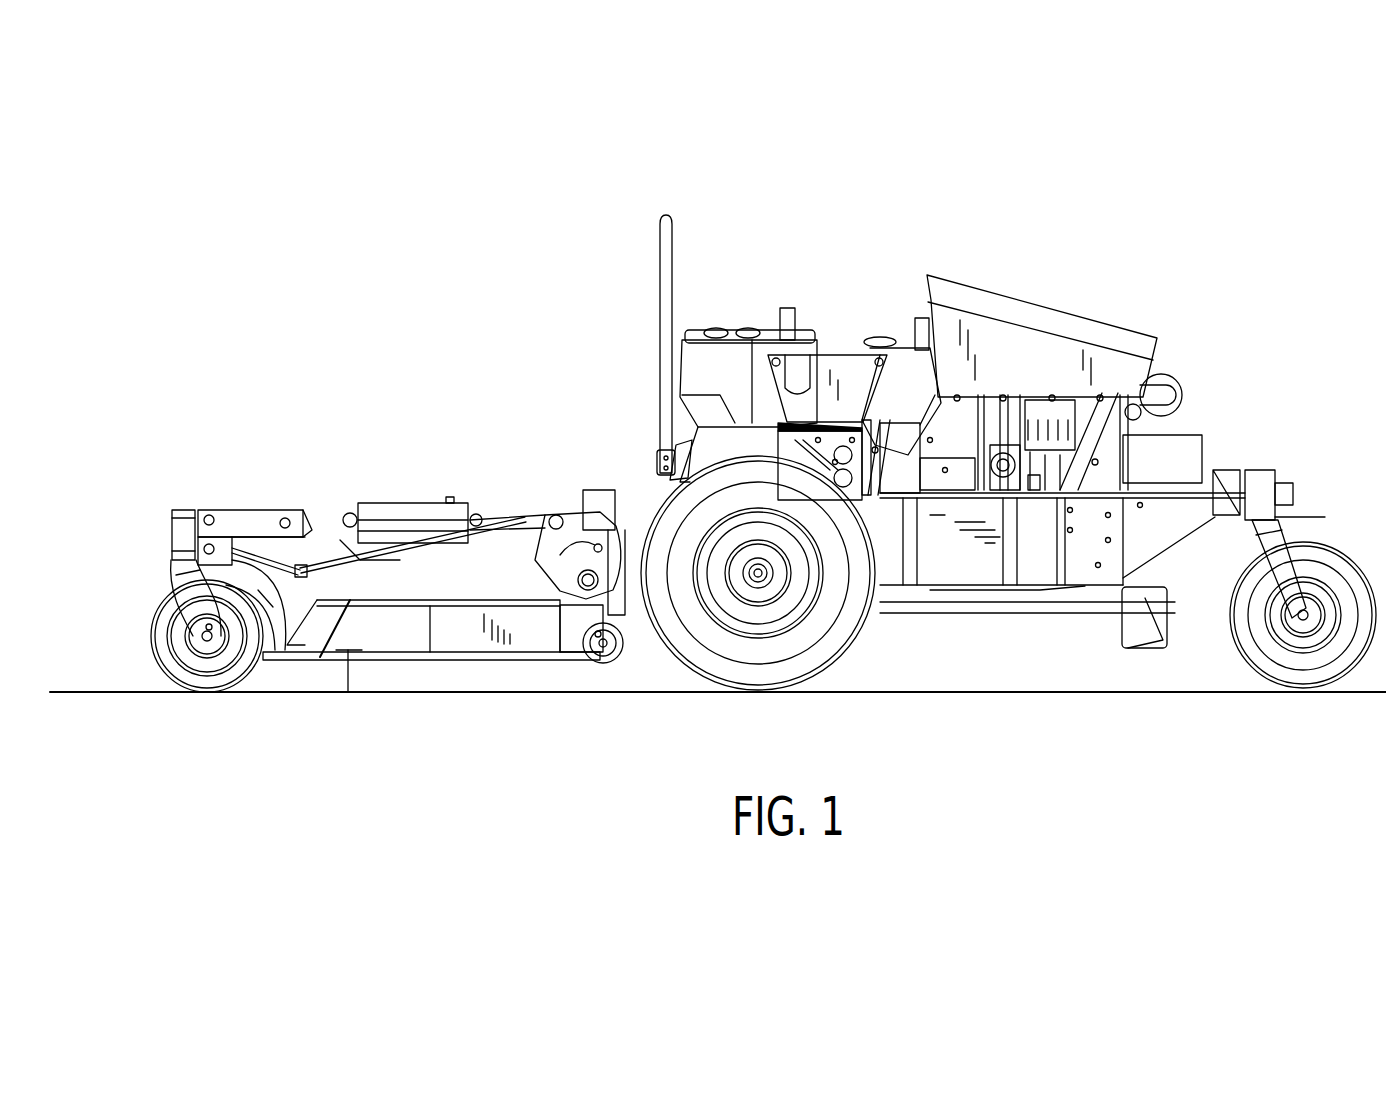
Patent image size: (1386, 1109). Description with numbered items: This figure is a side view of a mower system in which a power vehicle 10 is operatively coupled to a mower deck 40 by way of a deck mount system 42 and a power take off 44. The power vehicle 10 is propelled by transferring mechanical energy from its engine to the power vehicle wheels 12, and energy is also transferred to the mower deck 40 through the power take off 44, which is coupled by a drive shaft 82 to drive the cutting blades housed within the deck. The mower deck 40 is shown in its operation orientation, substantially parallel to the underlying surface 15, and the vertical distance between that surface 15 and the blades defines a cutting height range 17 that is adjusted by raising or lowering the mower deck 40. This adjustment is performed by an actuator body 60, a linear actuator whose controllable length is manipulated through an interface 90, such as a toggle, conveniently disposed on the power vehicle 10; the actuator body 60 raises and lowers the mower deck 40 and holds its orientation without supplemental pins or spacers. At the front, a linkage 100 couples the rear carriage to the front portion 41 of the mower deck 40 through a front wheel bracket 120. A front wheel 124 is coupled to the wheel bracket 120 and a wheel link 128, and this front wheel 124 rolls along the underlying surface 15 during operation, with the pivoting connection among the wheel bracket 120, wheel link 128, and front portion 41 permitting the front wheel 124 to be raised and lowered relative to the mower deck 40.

The power vehicle 10 is at (842, 340).
The power vehicle wheels 12 is at (837, 622).
The underlying surface 15 is at (100, 692).
The cutting height range 17 is at (345, 695).
The mower deck 40 is at (458, 593).
The front portion of the mower deck 41 is at (308, 648).
The deck mount system 42 is at (637, 625).
The power take off 44 is at (995, 615).
The actuator body 60 is at (480, 522).
The drive shaft 82 is at (640, 628).
The interface 90 is at (784, 314).
The linkage 100 is at (380, 550).
The front wheel bracket 120 is at (277, 658).
The front wheel 124 is at (166, 610).
The wheel link 128 is at (230, 552).